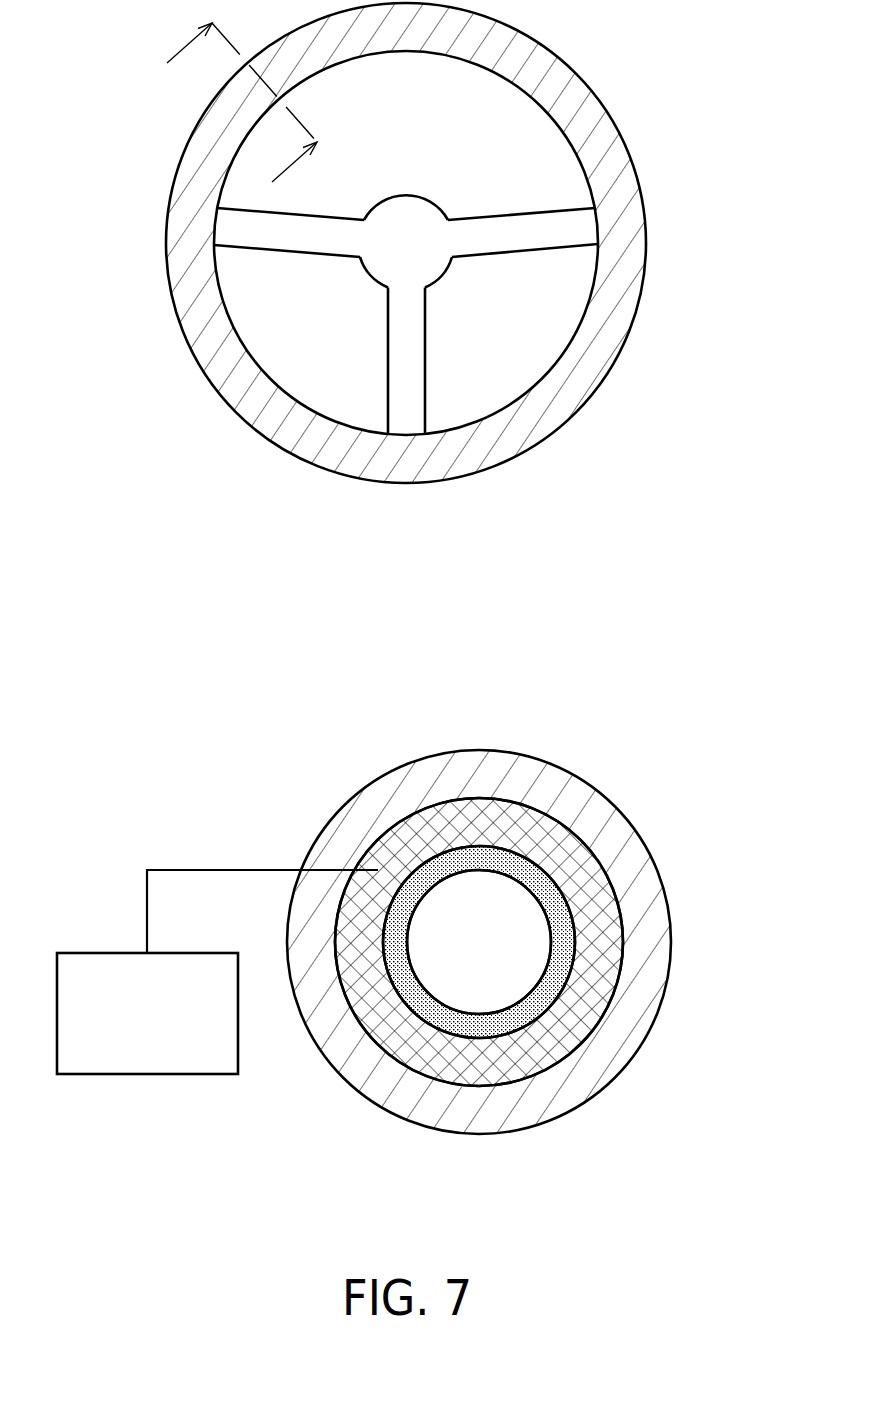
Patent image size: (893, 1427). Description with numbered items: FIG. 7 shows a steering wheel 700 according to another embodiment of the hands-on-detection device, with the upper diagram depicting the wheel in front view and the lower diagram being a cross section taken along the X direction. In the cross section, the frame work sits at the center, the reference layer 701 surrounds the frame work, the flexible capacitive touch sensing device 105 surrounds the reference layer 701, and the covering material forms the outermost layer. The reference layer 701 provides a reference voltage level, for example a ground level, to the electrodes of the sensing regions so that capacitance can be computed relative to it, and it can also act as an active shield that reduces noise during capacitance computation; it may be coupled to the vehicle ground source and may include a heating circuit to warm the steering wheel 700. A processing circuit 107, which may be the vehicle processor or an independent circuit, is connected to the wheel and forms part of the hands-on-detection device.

The steering wheel 700 is at (443, 243).
The flexible capacitive touch sensing device 105 is at (575, 1003).
The reference layer 701 is at (477, 1027).
The processing circuit 107 is at (147, 1075).